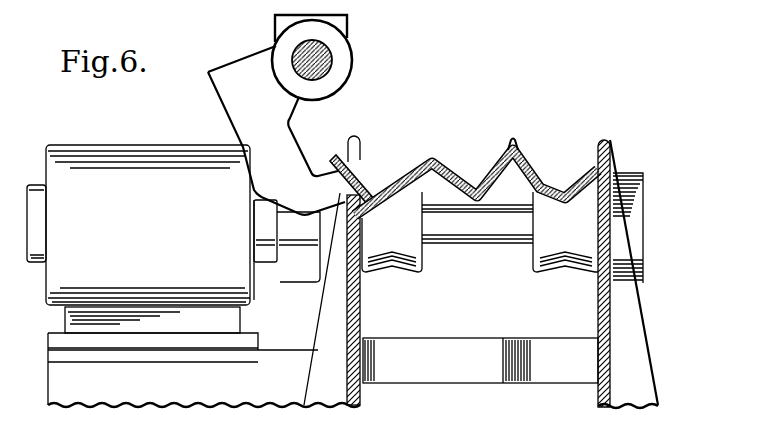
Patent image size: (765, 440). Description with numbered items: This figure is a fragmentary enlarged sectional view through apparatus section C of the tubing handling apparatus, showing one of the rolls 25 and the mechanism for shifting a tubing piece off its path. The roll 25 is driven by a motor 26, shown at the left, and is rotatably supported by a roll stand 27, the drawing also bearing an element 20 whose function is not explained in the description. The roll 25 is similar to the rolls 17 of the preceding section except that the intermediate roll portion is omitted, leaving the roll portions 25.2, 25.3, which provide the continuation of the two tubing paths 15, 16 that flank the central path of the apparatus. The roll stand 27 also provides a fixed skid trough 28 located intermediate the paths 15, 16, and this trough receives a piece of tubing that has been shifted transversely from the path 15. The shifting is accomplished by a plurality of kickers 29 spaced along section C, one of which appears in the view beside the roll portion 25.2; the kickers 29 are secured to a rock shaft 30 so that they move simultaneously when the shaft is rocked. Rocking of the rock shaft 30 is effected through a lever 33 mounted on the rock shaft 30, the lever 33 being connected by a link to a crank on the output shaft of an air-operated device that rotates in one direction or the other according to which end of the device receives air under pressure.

The second tubing path 15 is at (395, 164).
The second tubing path 16 is at (566, 146).
The roll 17 is at (371, 317).
The base block 20 is at (480, 389).
The roll 25 is at (486, 252).
The roll portion 25.2 is at (410, 256).
The roll portion 25.3 is at (553, 270).
The motor 26 is at (163, 226).
The roll stand 27 is at (304, 382).
The skid trough 28 is at (478, 182).
The kicker 29 is at (364, 157).
The rock shaft 30 is at (293, 50).
The lever 33 is at (344, 24).